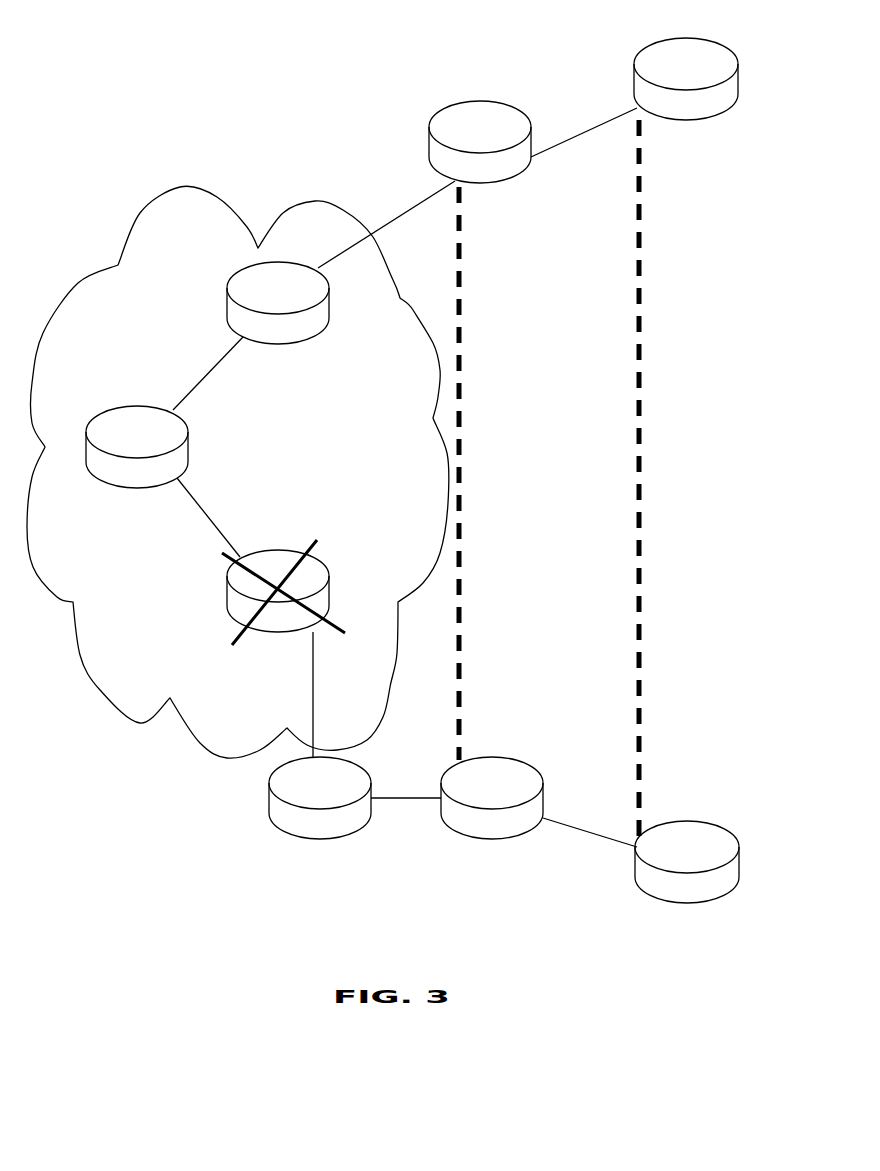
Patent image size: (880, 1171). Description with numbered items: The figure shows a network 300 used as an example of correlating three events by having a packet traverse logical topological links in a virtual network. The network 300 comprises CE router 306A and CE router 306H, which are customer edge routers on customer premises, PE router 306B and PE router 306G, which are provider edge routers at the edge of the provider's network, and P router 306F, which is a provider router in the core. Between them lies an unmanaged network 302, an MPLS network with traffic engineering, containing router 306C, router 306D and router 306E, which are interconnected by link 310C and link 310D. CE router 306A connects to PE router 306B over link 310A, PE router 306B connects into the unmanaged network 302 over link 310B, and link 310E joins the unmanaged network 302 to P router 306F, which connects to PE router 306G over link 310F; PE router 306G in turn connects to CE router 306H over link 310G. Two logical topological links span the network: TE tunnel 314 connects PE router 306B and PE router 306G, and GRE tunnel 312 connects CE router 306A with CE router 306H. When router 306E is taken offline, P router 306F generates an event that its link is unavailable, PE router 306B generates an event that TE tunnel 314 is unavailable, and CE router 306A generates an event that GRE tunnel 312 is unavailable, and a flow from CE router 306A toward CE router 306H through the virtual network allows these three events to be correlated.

The network 300 is at (333, 51).
The unmanaged network 302 is at (328, 512).
The CE router 306A is at (700, 107).
The PE router 306B is at (499, 167).
The router 306C is at (296, 316).
The router 306D is at (136, 471).
The router 306E is at (276, 617).
The P router 306F is at (316, 822).
The PE router 306G is at (491, 822).
The CE router 306H is at (686, 887).
The link 310A is at (584, 123).
The link 310B is at (386, 219).
The link 310C is at (180, 373).
The link 310D is at (203, 519).
The link 310E is at (337, 694).
The link 310F is at (406, 773).
The link 310G is at (590, 810).
The GRE tunnel 312 is at (653, 480).
The TE tunnel 314 is at (473, 473).